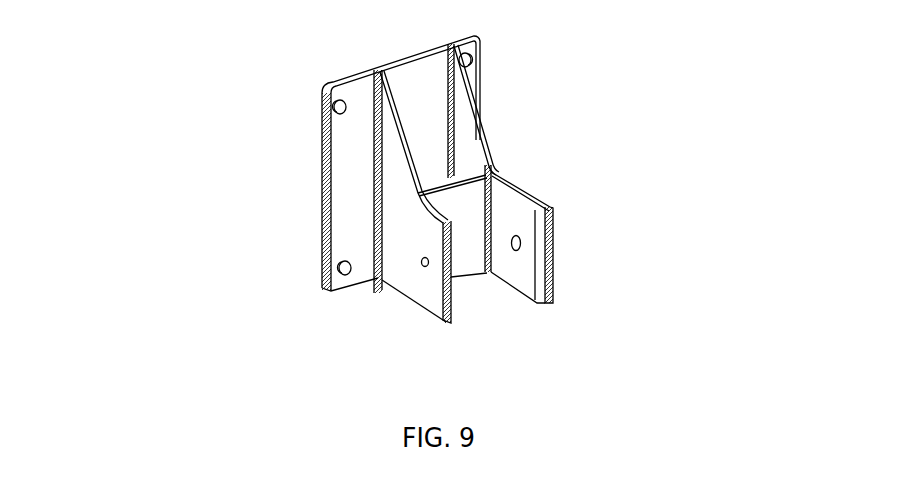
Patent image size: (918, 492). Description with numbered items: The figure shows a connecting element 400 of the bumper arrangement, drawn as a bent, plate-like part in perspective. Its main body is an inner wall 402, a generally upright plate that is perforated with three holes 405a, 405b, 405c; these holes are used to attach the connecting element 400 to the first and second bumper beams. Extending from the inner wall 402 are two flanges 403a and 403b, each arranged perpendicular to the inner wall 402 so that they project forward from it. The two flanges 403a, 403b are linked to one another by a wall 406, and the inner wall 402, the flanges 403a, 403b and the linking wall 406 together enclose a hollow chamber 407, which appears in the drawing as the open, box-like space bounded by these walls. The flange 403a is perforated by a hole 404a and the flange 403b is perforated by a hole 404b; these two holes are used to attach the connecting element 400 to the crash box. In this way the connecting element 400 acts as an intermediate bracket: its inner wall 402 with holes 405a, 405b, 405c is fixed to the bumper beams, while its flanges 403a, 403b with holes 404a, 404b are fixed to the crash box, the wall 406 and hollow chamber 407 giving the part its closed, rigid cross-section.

The connecting element 400 is at (149, 72).
The inner wall 402 is at (333, 187).
The flange 403a is at (400, 252).
The flange 403b is at (566, 230).
The hole 404a is at (420, 282).
The hole 404b is at (527, 262).
The hole 405a is at (330, 106).
The hole 405b is at (335, 268).
The hole 405c is at (478, 61).
The wall 406 is at (470, 228).
The hollow chamber 407 is at (433, 156).